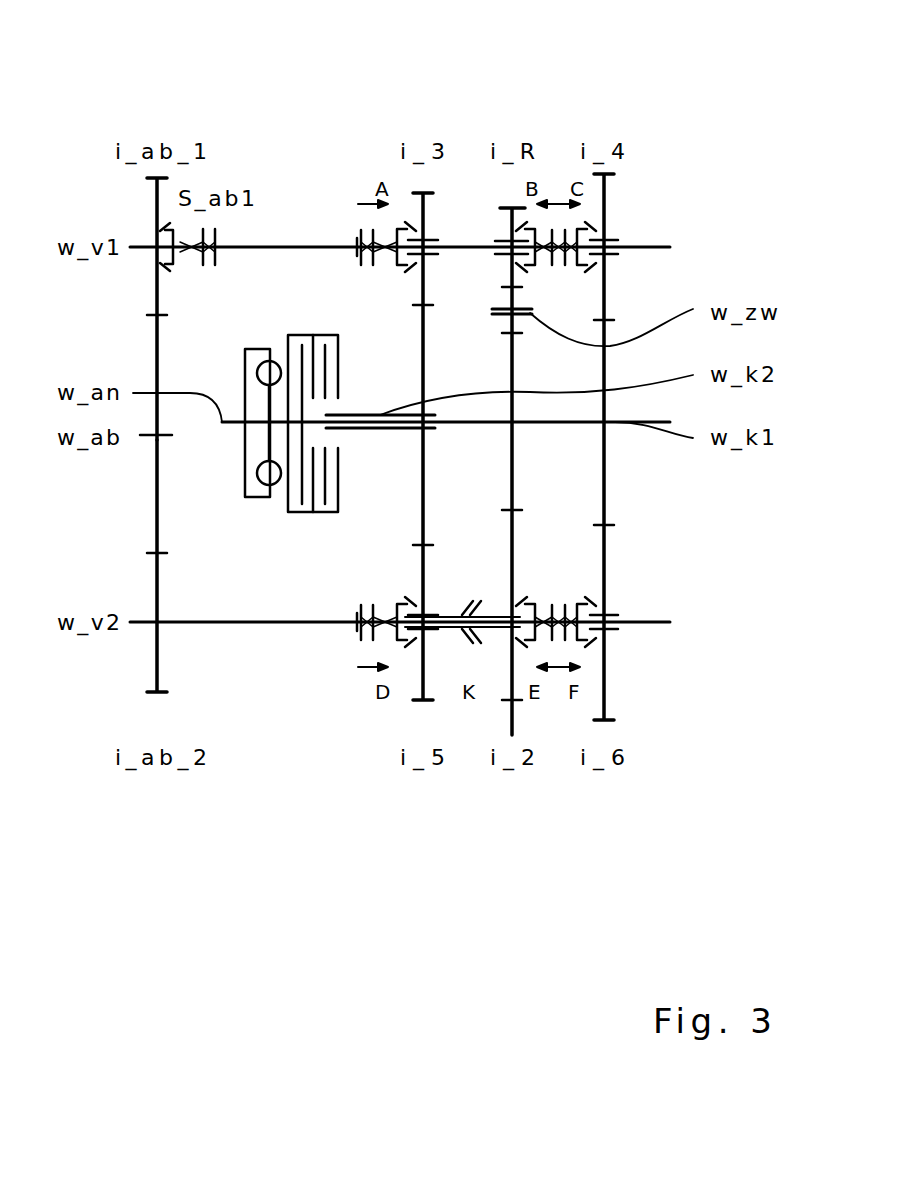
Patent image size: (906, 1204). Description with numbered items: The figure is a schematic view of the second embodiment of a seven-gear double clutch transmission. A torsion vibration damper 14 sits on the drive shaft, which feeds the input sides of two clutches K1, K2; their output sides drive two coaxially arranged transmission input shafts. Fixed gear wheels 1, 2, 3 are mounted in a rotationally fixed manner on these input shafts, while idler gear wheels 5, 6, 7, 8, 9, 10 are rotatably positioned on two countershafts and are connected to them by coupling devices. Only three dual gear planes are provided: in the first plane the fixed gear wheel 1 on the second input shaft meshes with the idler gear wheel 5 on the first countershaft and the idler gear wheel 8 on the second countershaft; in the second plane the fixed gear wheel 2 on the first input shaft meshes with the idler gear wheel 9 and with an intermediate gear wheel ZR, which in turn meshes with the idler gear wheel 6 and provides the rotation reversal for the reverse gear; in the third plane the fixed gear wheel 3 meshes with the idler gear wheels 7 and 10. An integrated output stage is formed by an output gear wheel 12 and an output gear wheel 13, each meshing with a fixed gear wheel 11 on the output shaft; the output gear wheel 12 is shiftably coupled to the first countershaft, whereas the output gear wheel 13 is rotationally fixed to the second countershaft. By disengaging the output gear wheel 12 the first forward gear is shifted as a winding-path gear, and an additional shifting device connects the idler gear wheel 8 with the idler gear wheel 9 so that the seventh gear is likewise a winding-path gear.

The fixed gear wheel 1 is at (422, 488).
The fixed gear wheel 2 is at (512, 480).
The fixed gear wheel 3 is at (604, 472).
The idler gear wheel 5 is at (422, 196).
The idler gear wheel 6 is at (510, 219).
The idler gear wheel 7 is at (605, 202).
The idler gear wheel 8 is at (422, 573).
The idler gear wheel 9 is at (508, 687).
The idler gear wheel 10 is at (605, 653).
The fixed gear wheel 11 is at (272, 346).
The output gear wheel 12 is at (152, 200).
The output gear wheel 13 is at (153, 662).
The torsion vibration damper 14 is at (252, 497).
The first clutch K1 is at (302, 335).
The second clutch K2 is at (333, 335).
The intermediate gear wheel ZR is at (520, 293).